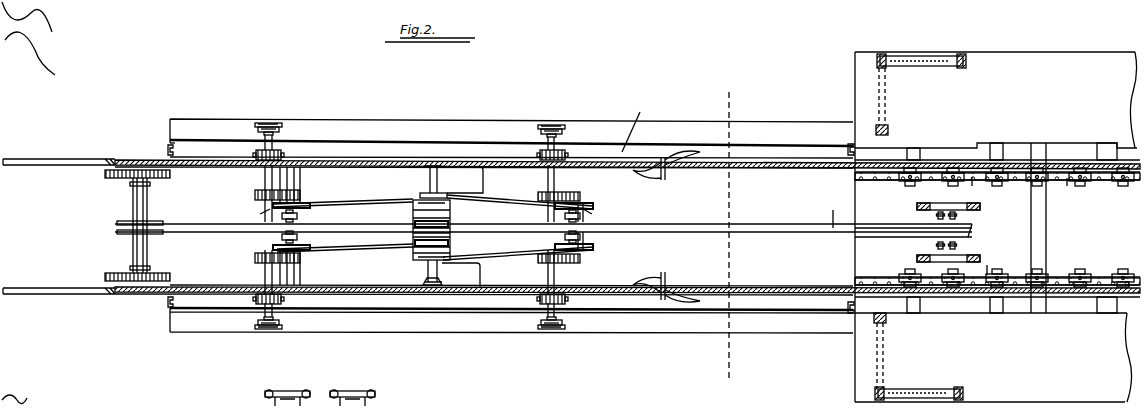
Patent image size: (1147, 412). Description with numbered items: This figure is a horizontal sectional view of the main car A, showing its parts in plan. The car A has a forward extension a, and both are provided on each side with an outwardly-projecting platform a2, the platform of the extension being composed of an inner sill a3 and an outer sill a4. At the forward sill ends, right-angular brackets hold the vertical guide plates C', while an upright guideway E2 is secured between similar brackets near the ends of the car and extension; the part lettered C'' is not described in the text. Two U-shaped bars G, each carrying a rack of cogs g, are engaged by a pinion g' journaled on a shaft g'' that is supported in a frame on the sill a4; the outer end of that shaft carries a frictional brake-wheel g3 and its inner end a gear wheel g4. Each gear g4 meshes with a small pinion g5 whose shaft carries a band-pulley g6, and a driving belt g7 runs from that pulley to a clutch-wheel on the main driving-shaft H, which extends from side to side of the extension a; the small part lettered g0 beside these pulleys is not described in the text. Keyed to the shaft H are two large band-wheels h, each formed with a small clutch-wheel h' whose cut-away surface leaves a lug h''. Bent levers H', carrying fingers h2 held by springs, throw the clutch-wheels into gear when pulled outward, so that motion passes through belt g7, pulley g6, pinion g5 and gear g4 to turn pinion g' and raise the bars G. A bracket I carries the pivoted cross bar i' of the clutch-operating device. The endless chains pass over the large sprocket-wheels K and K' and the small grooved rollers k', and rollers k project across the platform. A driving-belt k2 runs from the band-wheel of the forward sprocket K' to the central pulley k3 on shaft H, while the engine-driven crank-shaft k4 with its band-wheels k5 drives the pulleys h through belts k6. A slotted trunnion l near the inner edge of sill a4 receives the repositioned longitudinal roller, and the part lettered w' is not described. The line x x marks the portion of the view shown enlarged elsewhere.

The forward extension a is at (383, 158).
The platform a2 is at (993, 357).
The inner sill a3 is at (345, 158).
The outer sill a4 is at (728, 132).
The main car A is at (996, 227).
The guide plate C' is at (199, 121).
The frame bar C'' is at (141, 329).
The upright guideway E2 is at (853, 145).
The U-shaped bar G is at (277, 143).
The cogs or teeth g is at (397, 236).
The pinion g' is at (430, 231).
The shaft g'' is at (435, 228).
The frictional brake-wheel g3 is at (561, 126).
The gear wheel or pinion g4 is at (254, 205).
The small pinion g5 is at (590, 267).
The band-pulley g6 is at (590, 249).
The bolt g0 is at (270, 210).
The driving belt or band g7 is at (433, 227).
The main driving-shaft H is at (551, 224).
The bent lever H' is at (623, 347).
The band-wheel h is at (418, 225).
The clutch-wheel h' is at (421, 238).
The lug or tooth h'' is at (462, 237).
The finger h2 is at (666, 226).
The bracket I is at (973, 176).
The cross bar or arm i' is at (920, 227).
The sprocket-wheel K is at (150, 307).
The forward sprocket-wheel K' is at (155, 145).
The roller k is at (997, 237).
The grooved wheel or roller k' is at (1016, 226).
The driving-belt k2 is at (168, 223).
The central pulley k3 is at (439, 242).
The crank-shaft k4 is at (920, 232).
The band-wheel k5 is at (972, 227).
The driving-belt k6 is at (828, 211).
The slotted trunnion l is at (888, 130).
The rod w' is at (59, 218).
The section line x is at (728, 236).